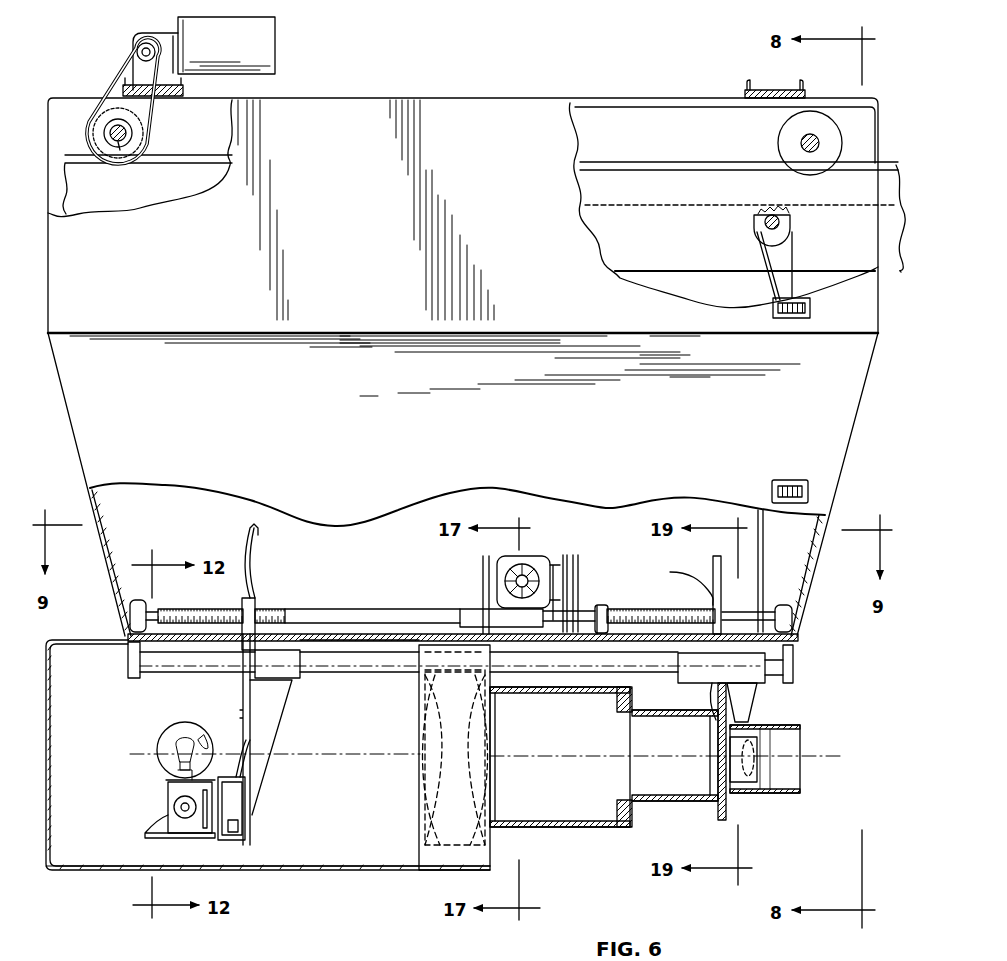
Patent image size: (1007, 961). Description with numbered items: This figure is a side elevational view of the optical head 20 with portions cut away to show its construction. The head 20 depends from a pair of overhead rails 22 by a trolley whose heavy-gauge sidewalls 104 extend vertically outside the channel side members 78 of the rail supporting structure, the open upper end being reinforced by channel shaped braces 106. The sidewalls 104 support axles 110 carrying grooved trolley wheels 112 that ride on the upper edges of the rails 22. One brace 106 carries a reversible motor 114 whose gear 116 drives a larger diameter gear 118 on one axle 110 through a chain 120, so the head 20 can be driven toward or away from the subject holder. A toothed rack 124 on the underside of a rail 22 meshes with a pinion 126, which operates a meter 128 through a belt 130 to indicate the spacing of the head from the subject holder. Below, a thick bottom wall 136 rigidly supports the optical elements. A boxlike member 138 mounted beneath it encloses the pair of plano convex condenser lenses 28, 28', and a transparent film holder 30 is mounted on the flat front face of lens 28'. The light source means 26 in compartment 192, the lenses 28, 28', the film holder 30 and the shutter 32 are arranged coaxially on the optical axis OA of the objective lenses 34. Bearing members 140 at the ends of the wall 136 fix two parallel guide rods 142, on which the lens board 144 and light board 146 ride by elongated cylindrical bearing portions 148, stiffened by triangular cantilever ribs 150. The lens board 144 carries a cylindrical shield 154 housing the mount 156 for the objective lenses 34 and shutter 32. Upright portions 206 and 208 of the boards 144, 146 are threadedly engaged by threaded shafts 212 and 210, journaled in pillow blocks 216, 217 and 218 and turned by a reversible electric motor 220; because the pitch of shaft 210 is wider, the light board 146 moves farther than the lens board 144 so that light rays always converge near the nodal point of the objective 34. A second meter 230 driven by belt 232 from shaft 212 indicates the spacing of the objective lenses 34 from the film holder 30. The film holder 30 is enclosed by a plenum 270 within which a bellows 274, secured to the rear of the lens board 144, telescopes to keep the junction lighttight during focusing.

The optical head 20 is at (88, 498).
The overhead rails 22 is at (640, 162).
The light source means 26 is at (148, 792).
The plano convex condenser lens 28 is at (418, 760).
The plano convex condenser lens 28' is at (421, 765).
The film holder 30 is at (512, 729).
The shutter 32 is at (718, 760).
The objective lenses 34 is at (757, 786).
The channel side members 78 is at (855, 242).
The sidewalls 104 is at (176, 281).
The channel shaped braces 106 is at (185, 92).
The axles 110 is at (122, 145).
The trolley wheels 112 is at (778, 143).
The reversible motor 114 is at (275, 45).
The gear 116 is at (137, 50).
The gear 118 is at (138, 138).
The chain 120 is at (110, 88).
The toothed rack 124 is at (662, 208).
The pinion 126 is at (752, 228).
The meter 128 is at (803, 318).
The belt 130 is at (770, 280).
The bottom wall 136 is at (366, 628).
The boxlike member 138 is at (435, 858).
The bearing members 140 is at (128, 662).
The guide rods 142 is at (190, 672).
The lens board 144 is at (735, 698).
The light board 146 is at (252, 717).
The bearing portions 148 is at (300, 678).
The cantilever ribs 150 is at (260, 764).
The cylindrical shield 154 is at (798, 785).
The mount 156 is at (755, 790).
The compartment 192 is at (306, 862).
The upright portion 206 is at (713, 580).
The upright portion 208 is at (254, 600).
The threaded shaft 210 is at (286, 610).
The threaded shaft 212 is at (660, 612).
The pillow block 216 is at (795, 612).
The pillow block 217 is at (600, 606).
The pillow block 218 is at (130, 611).
The reversible electric motor 220 is at (498, 570).
The second meter 230 is at (773, 484).
The belt 232 is at (765, 538).
The plenum 270 is at (550, 827).
The bellows 274 is at (650, 802).
The optical axis OA is at (150, 753).